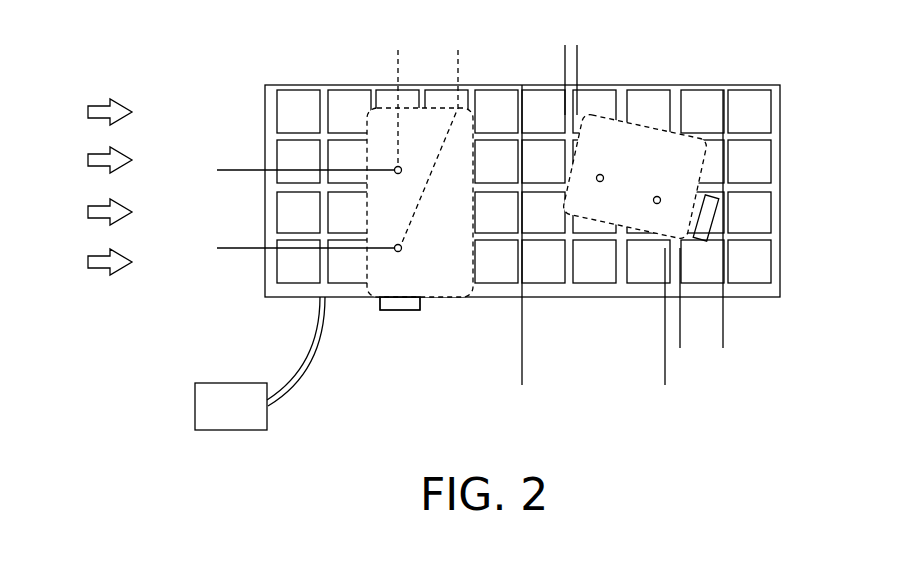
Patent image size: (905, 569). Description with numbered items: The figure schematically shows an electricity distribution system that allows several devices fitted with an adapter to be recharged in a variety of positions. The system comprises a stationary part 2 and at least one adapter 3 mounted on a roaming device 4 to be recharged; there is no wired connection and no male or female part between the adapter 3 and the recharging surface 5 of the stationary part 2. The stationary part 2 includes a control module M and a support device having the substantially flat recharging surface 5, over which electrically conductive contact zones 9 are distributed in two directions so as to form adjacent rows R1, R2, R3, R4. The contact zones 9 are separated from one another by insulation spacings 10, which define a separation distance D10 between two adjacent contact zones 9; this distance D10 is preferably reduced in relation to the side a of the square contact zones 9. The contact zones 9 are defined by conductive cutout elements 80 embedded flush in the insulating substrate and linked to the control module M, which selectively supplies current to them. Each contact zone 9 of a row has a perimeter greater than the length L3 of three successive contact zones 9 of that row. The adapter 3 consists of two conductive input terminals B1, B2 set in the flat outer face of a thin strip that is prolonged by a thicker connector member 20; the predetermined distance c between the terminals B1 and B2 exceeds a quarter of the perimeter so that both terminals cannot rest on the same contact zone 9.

The stationary part 2 is at (451, 259).
The adapter 3 is at (393, 310).
The roaming device 4 is at (362, 128).
The recharging surface 5 is at (770, 267).
The contact zones 9 is at (748, 116).
The insulation spacings 10 is at (755, 188).
The connector member 20 is at (420, 308).
The cutout elements 80 is at (297, 272).
The first input terminal B1 is at (436, 136).
The second input terminal B2 is at (397, 97).
The separation distance D10 is at (548, 50).
The length of three successive contact zones L3 is at (522, 368).
The side a is at (740, 333).
The predetermined distance c is at (233, 170).
The control module M is at (228, 430).
The first row R1 is at (88, 112).
The second row R2 is at (88, 160).
The third row R3 is at (88, 212).
The fourth row R4 is at (88, 262).